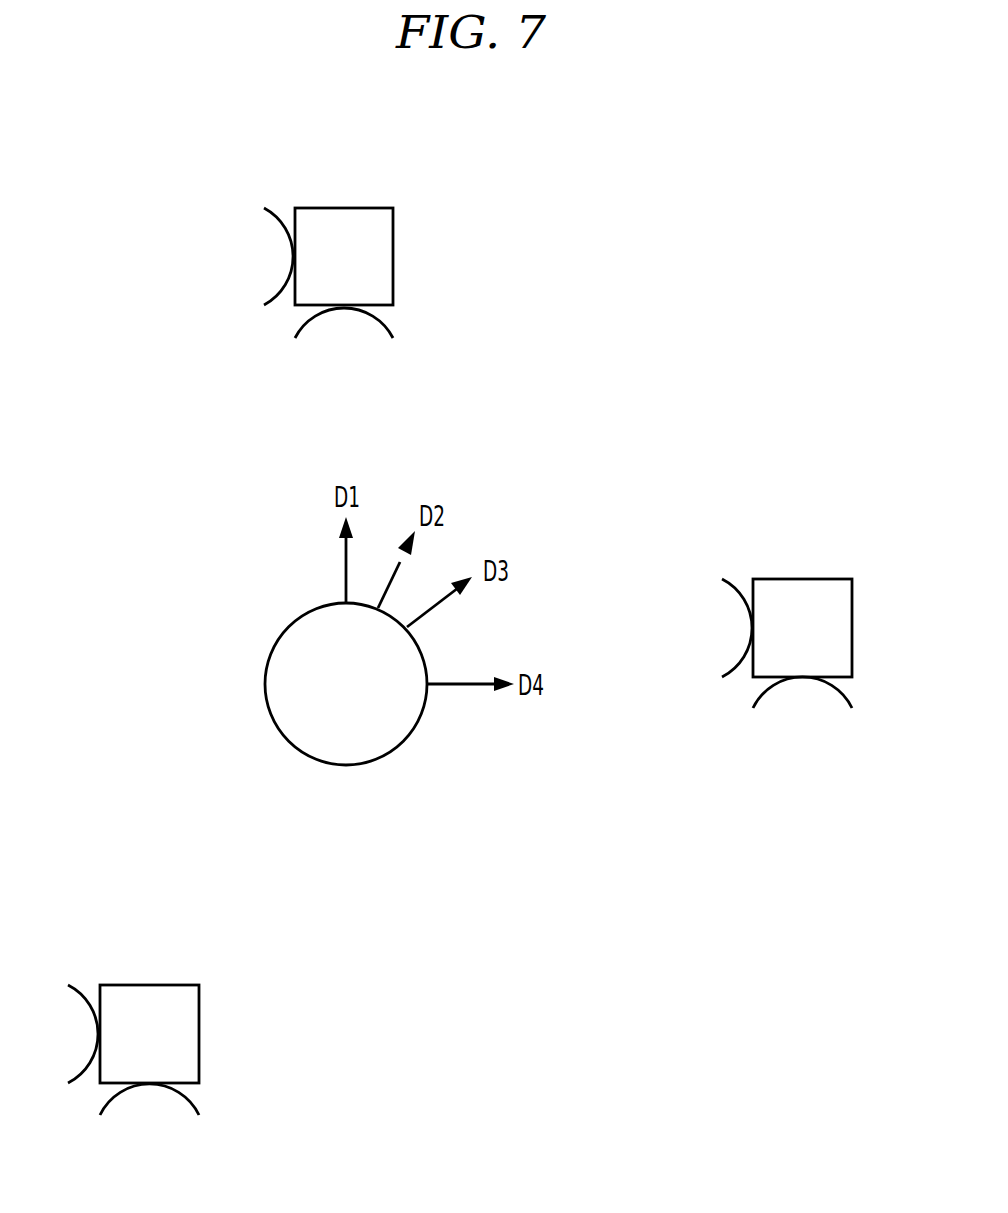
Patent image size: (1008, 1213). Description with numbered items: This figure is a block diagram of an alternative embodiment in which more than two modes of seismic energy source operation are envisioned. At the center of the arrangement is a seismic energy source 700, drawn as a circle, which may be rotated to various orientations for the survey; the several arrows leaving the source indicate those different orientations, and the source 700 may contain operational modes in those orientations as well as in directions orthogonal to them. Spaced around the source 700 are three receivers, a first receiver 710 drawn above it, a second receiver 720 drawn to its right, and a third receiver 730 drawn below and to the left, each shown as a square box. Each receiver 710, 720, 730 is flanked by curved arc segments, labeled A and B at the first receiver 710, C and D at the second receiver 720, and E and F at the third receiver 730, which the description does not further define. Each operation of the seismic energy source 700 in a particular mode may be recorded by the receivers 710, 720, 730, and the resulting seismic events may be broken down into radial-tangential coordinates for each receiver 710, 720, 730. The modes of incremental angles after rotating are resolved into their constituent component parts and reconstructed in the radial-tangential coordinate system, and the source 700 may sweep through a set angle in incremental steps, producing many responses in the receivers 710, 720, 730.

The seismic energy source 700 is at (265, 681).
The receiver 710 is at (373, 207).
The receiver 720 is at (819, 578).
The receiver 730 is at (166, 985).
The left boundary arc of R1 A is at (274, 210).
The bottom boundary arc of R1 B is at (393, 332).
The left boundary arc of R2 C is at (735, 580).
The bottom boundary arc of R2 D is at (852, 702).
The left boundary arc of R3 E is at (82, 987).
The bottom boundary arc of R3 F is at (200, 1110).